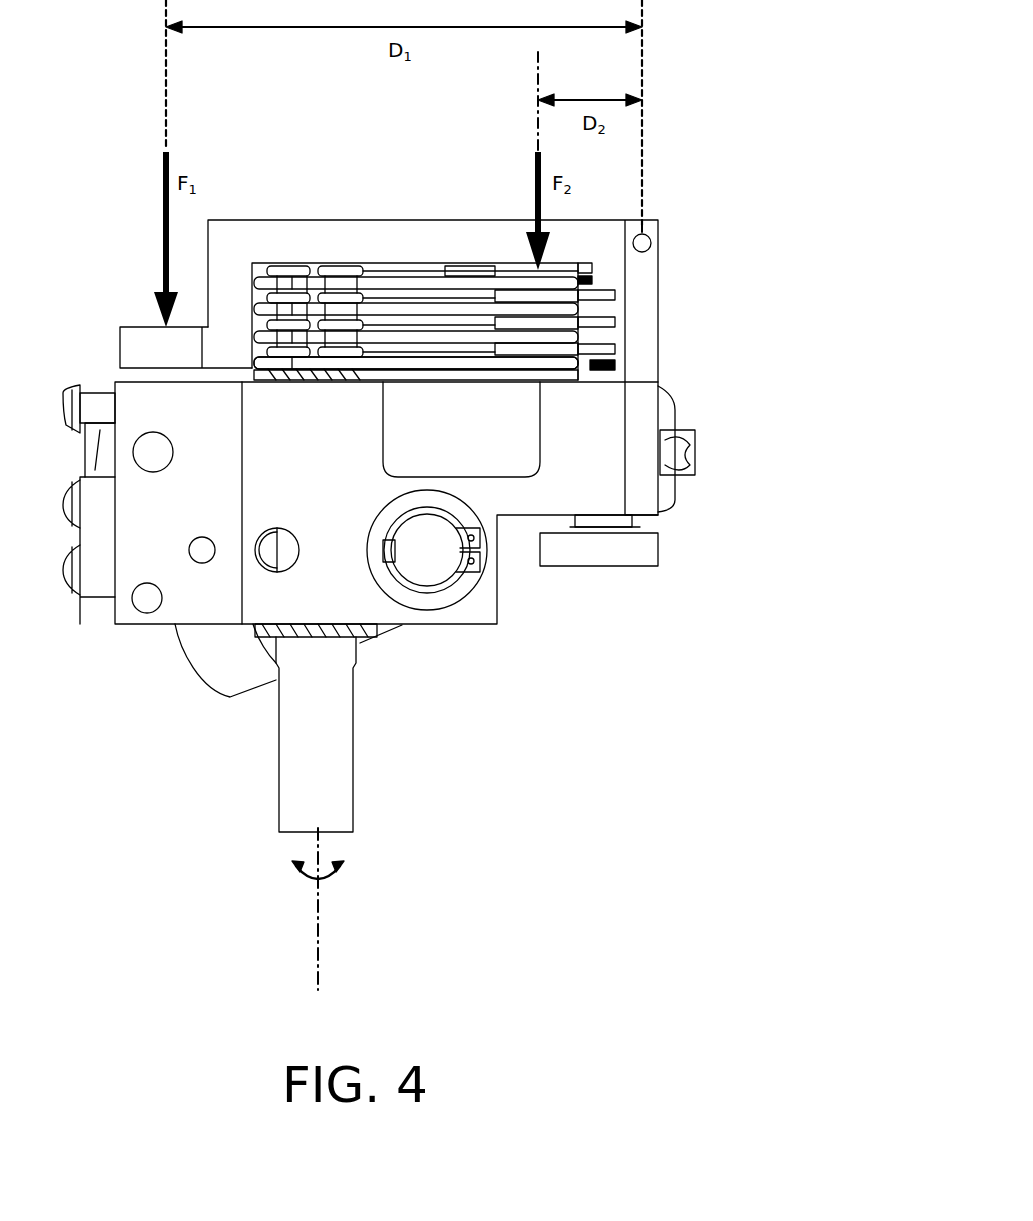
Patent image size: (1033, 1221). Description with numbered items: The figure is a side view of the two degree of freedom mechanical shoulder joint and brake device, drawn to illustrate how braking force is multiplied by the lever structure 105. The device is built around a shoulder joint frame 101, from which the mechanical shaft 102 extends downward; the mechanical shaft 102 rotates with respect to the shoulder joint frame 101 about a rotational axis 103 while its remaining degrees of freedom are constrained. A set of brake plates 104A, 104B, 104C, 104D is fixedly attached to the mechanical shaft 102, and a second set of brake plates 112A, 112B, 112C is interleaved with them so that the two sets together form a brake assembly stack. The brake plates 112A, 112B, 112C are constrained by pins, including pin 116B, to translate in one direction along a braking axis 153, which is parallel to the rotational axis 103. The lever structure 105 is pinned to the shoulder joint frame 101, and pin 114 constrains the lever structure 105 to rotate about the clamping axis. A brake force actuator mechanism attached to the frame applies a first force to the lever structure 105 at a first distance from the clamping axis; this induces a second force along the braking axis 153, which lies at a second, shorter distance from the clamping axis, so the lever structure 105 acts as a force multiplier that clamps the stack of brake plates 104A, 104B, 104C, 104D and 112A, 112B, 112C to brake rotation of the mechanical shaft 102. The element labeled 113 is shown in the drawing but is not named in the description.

The shoulder joint frame 101 is at (470, 603).
The mechanical shaft 102 is at (276, 795).
The rotational axis 103 is at (320, 918).
The brake plate 104A is at (377, 273).
The brake plate 104B is at (395, 303).
The brake plate 104C is at (414, 330).
The brake plate 104D is at (428, 360).
The lever structure 105 is at (322, 220).
The brake plate 112A is at (615, 291).
The brake plate 112B is at (615, 318).
The brake plate 112C is at (615, 345).
The base plate 113 is at (570, 350).
The pin 114 is at (642, 236).
The pin 116B is at (588, 281).
The braking axis 153 is at (537, 62).